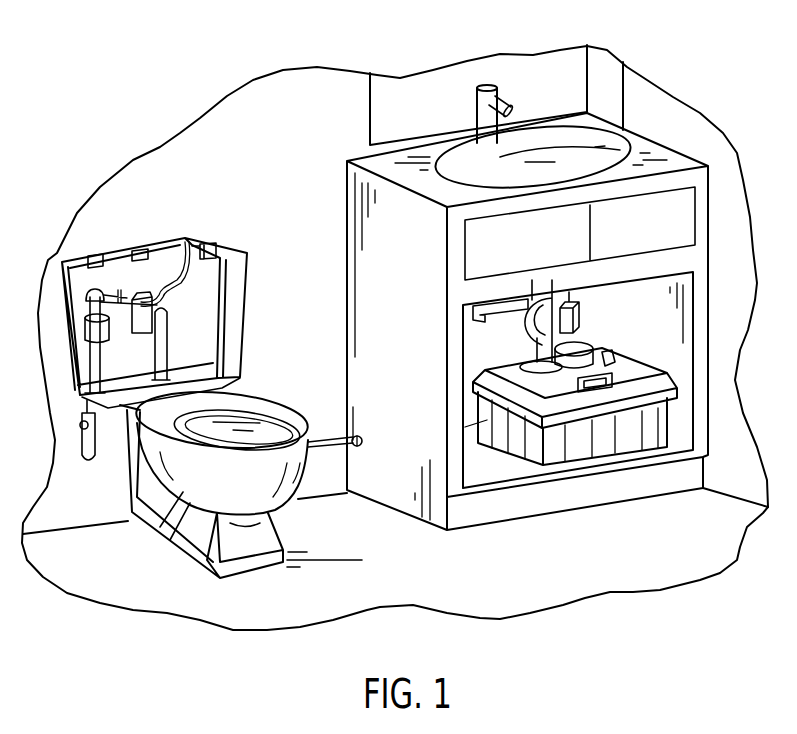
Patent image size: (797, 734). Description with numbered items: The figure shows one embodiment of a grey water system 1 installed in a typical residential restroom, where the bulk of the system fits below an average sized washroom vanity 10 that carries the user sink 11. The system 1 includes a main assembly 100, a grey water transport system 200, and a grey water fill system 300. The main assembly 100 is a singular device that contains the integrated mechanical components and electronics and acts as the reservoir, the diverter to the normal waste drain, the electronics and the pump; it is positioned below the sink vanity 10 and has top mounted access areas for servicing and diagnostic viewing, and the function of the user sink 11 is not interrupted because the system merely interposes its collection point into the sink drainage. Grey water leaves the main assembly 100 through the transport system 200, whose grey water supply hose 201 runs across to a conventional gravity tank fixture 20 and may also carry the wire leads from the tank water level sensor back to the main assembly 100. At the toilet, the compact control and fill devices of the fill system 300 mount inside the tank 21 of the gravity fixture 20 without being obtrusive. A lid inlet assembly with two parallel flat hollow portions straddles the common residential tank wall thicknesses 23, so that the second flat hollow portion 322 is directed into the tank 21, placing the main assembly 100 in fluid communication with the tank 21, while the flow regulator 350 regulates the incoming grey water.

The grey water system 1 is at (151, 63).
The washroom vanity 10 is at (657, 145).
The user sink 11 is at (590, 140).
The main assembly 100 is at (600, 452).
The gravity tank fixture 20 is at (137, 537).
The grey water transport system 200 is at (317, 479).
The grey water supply hose 201 is at (323, 435).
The tank 21 is at (60, 267).
The gravity fixture thicknesses 23 is at (163, 243).
The grey water fill system 300 is at (132, 252).
The second flat hollow portion 322 is at (227, 240).
The flow regulator 350 is at (78, 412).